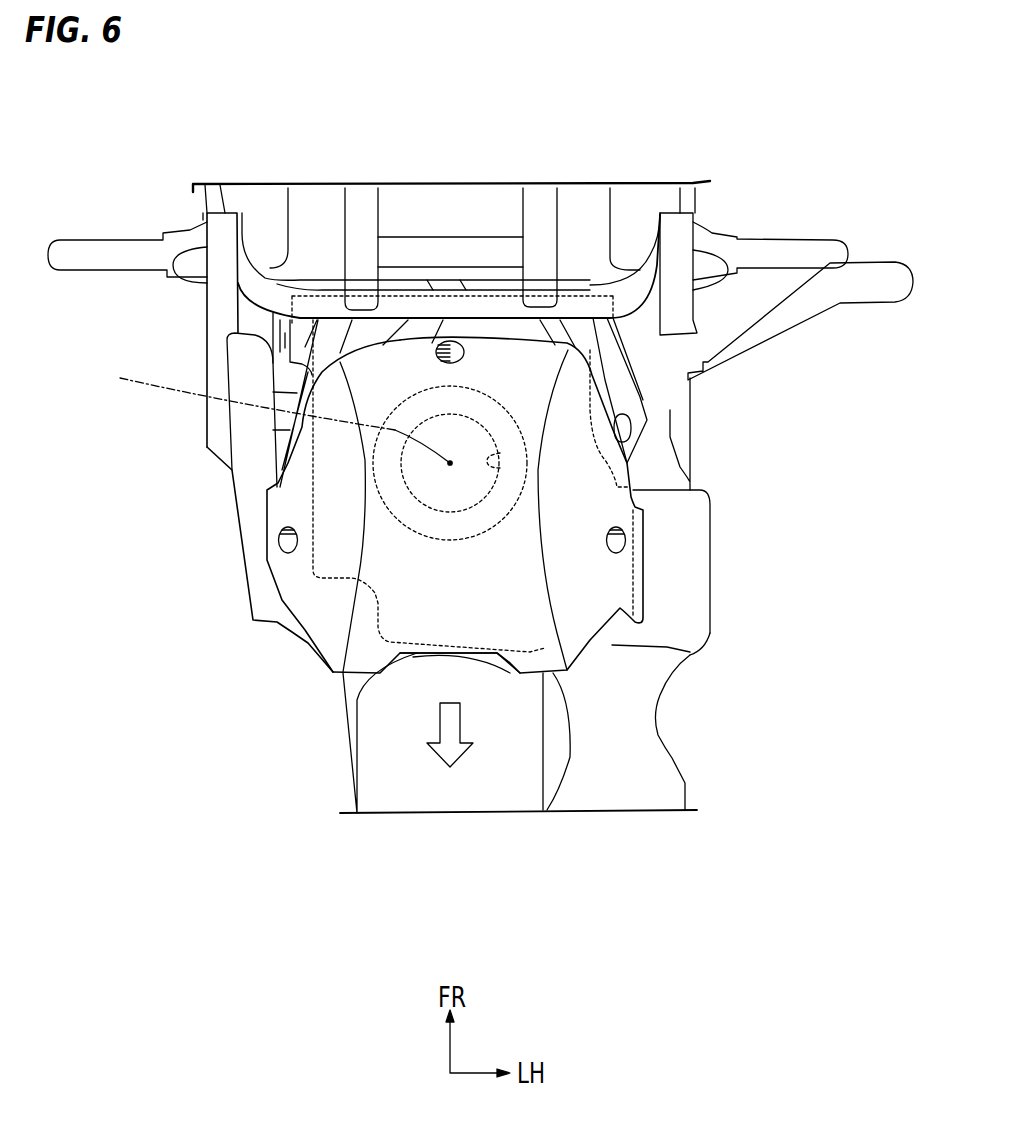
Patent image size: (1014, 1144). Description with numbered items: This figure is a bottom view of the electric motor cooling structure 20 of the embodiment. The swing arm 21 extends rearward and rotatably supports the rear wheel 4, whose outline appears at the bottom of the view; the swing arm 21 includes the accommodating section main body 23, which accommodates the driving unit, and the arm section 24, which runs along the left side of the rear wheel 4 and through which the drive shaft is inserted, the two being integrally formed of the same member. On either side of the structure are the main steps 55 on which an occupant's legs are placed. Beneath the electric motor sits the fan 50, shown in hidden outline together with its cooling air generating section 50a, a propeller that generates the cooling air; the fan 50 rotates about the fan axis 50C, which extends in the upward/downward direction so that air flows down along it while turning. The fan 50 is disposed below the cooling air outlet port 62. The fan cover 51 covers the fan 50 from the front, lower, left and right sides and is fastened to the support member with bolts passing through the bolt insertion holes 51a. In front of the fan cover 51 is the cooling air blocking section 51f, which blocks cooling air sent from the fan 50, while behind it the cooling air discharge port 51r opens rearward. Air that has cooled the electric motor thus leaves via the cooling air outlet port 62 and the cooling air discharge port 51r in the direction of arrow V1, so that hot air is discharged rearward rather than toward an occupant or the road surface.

The rear wheel 4 is at (413, 800).
The electric motor cooling structure 20 is at (302, 663).
The swing arm 21 is at (714, 632).
The accommodating section main body 23 is at (703, 585).
The arm section 24 is at (658, 767).
The fan 50 is at (462, 474).
The cooling air generating section 50a is at (513, 406).
The fan axis 50C is at (261, 414).
The fan cover 51 is at (300, 588).
The bolt insertion hole 51a is at (450, 347).
The cooling air blocking section 51f is at (521, 360).
The cooling air discharge port 51r is at (417, 655).
The main step 55 is at (110, 243).
The cooling air outlet port 62 is at (492, 469).
The arrow V1 is at (465, 723).